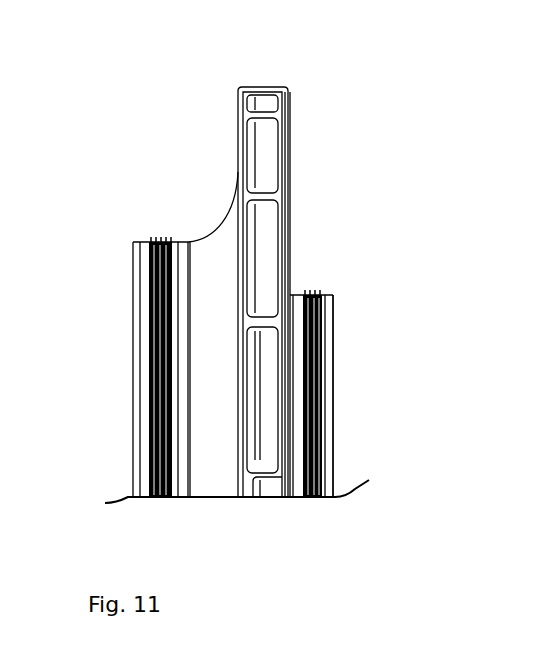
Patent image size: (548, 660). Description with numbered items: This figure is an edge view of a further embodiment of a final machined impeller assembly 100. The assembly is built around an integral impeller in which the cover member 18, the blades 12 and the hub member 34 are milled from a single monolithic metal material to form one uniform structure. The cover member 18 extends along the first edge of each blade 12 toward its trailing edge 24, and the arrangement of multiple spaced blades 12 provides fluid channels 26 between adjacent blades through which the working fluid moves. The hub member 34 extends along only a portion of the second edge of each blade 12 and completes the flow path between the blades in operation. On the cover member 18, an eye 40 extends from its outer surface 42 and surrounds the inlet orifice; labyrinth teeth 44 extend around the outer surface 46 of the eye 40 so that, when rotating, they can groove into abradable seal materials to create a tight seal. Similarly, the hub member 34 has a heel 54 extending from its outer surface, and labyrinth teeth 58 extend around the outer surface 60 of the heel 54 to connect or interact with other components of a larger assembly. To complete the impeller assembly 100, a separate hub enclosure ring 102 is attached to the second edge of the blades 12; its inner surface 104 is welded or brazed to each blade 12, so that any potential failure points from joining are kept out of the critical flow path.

The impeller assembly 100 is at (96, 296).
The cover member 18 is at (196, 126).
The blade 12 is at (268, 104).
The hub enclosure ring 102 is at (292, 126).
The trailing edge 24 is at (270, 191).
The inner surface 104 is at (279, 234).
The fluid channel 26 is at (266, 425).
The hub member 34 is at (341, 410).
The labyrinth teeth 58 is at (312, 290).
The outer surface 60 is at (326, 293).
The heel 54 is at (306, 502).
The eye 40 is at (157, 482).
The outer surface 42 is at (214, 455).
The outer surface 46 is at (150, 240).
The labyrinth teeth 44 is at (163, 240).